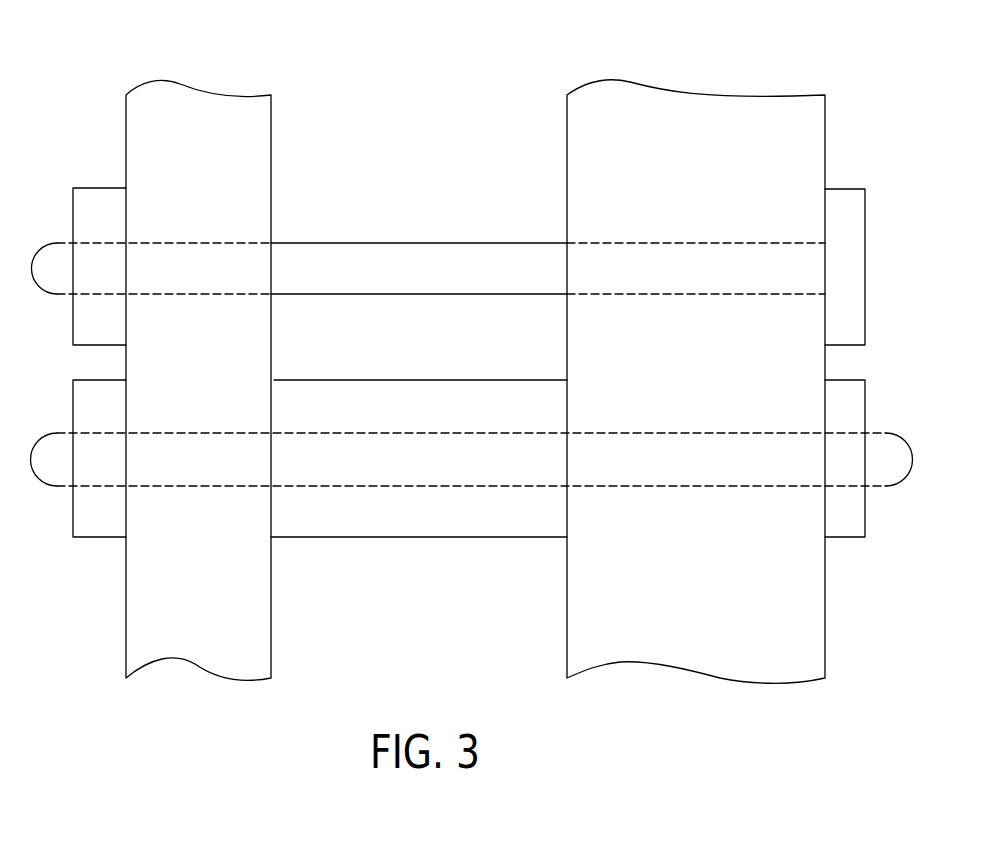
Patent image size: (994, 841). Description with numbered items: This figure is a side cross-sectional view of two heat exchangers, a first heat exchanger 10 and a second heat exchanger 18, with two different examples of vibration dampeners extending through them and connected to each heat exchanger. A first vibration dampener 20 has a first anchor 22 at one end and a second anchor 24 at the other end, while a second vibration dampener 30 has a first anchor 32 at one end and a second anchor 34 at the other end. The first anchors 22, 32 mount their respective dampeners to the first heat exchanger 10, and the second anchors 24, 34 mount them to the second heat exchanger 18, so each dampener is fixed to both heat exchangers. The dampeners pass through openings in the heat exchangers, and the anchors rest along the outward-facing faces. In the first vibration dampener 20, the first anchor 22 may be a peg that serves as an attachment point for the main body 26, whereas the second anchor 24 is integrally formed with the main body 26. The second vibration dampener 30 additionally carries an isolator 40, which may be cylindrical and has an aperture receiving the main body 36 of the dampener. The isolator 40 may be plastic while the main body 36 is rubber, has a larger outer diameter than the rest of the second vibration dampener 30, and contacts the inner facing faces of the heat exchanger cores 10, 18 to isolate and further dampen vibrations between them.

The first heat exchanger 10 is at (208, 108).
The second heat exchanger 18 is at (694, 108).
The first vibration dampener 20 is at (311, 230).
The first anchor 22 is at (93, 218).
The second anchor 24 is at (850, 216).
The main body 26 is at (493, 257).
The second vibration dampener 30 is at (333, 555).
The first anchor 32 is at (93, 404).
The second anchor 34 is at (851, 403).
The main body 36 is at (460, 467).
The isolator 40 is at (428, 527).